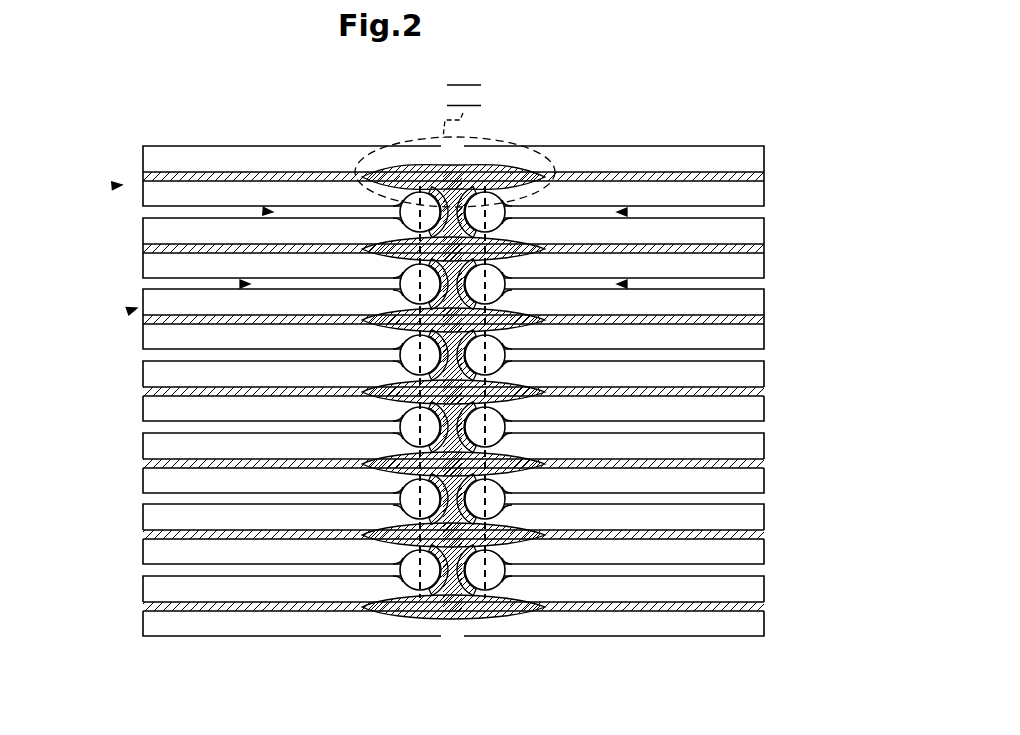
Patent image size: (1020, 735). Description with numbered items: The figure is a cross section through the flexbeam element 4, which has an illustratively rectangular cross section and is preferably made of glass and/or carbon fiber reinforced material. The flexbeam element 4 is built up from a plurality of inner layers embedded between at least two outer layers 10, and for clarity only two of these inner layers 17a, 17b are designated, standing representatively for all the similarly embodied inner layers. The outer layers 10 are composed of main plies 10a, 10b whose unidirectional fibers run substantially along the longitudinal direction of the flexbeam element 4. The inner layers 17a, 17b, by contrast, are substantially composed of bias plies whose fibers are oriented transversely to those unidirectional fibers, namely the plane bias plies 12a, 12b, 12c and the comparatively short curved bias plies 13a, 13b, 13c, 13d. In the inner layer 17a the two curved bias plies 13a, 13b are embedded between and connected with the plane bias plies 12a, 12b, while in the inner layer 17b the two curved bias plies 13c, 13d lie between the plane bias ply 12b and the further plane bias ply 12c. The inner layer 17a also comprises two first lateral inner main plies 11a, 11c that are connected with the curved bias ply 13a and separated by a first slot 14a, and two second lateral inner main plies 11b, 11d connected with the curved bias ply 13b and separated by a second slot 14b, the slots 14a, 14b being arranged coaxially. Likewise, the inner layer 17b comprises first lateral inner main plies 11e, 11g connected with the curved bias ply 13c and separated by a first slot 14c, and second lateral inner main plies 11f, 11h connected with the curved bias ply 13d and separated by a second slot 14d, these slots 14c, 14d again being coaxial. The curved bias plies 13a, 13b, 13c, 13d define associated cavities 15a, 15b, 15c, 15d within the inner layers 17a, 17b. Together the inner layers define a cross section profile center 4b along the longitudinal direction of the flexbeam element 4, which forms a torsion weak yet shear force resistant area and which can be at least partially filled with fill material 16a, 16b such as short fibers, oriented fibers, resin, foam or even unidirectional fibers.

The flexbeam element 4 is at (447, 369).
The cross section profile center 4b is at (410, 571).
The outer layers 10 is at (447, 382).
The main ply 10a is at (245, 160).
The main ply 10b is at (670, 625).
The first lateral inner main ply 11a is at (150, 193).
The second lateral inner main ply 11b is at (752, 193).
The first lateral inner main ply 11c is at (150, 230).
The second lateral inner main ply 11d is at (752, 232).
The first lateral inner main ply 11e is at (150, 267).
The second lateral inner main ply 11f is at (752, 268).
The first lateral inner main ply 11g is at (127, 311).
The second lateral inner main ply 11h is at (690, 333).
The plane bias ply 12a is at (640, 172).
The plane bias ply 12b is at (715, 253).
The plane bias ply 12c is at (187, 324).
The curved bias ply 13a is at (397, 182).
The curved bias ply 13b is at (535, 195).
The curved bias ply 13c is at (383, 314).
The curved bias ply 13d is at (550, 262).
The first slot 14a is at (265, 212).
The second slot 14b is at (625, 212).
The first slot 14c is at (242, 284).
The second slot 14d is at (625, 284).
The cavity 15a is at (410, 190).
The cavity 15b is at (500, 192).
The cavity 15c is at (375, 267).
The cavity 15d is at (548, 262).
The fill material 16a is at (460, 178).
The fill material 16b is at (475, 272).
The inner layer 17a is at (114, 185).
The inner layer 17b is at (127, 311).